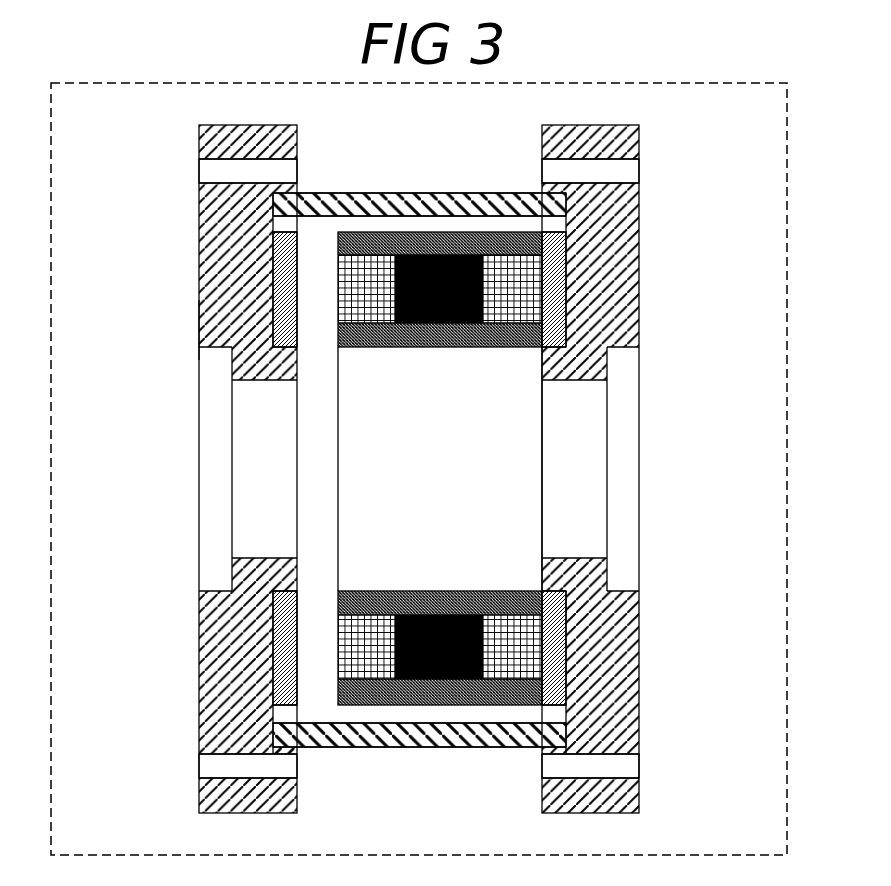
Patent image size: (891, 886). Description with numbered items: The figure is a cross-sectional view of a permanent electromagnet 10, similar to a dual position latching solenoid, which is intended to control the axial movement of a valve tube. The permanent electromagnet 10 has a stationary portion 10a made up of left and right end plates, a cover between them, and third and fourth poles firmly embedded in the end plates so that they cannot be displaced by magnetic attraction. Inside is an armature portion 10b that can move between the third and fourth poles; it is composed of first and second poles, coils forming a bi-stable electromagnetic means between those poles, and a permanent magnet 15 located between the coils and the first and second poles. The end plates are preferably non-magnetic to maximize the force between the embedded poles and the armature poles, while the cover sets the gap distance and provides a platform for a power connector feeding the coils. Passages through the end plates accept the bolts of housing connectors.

The permanent electromagnet 10 is at (787, 470).
The stationary portion 10a is at (199, 327).
The armature portion 10b is at (438, 690).
The permanent magnet 15 is at (405, 690).